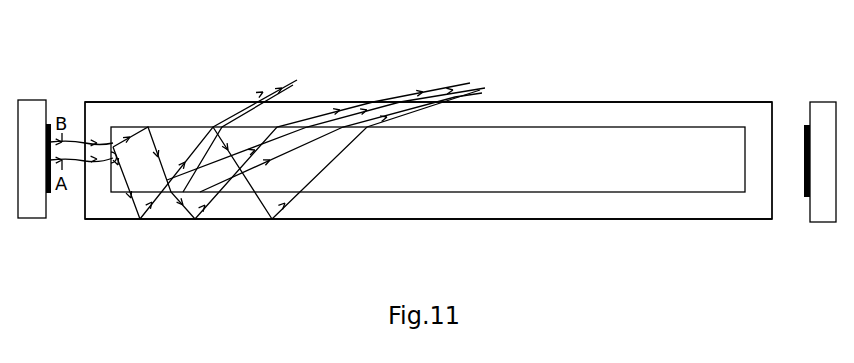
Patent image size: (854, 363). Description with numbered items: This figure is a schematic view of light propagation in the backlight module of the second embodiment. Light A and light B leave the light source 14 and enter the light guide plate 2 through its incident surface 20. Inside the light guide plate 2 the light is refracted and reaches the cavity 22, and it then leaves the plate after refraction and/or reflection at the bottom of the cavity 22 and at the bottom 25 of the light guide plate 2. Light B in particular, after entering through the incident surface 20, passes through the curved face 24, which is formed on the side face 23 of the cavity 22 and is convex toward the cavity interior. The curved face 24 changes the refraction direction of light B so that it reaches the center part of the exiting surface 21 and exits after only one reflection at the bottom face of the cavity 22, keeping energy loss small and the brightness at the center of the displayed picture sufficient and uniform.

The light guide plate 2 is at (84, 101).
The light source 14 is at (32, 203).
The incident surface 20 is at (85, 202).
The exiting surface 21 is at (583, 102).
The cavity 22 is at (533, 163).
The side face 23 is at (133, 157).
The curved face 24 is at (113, 147).
The bottom 25 is at (615, 219).